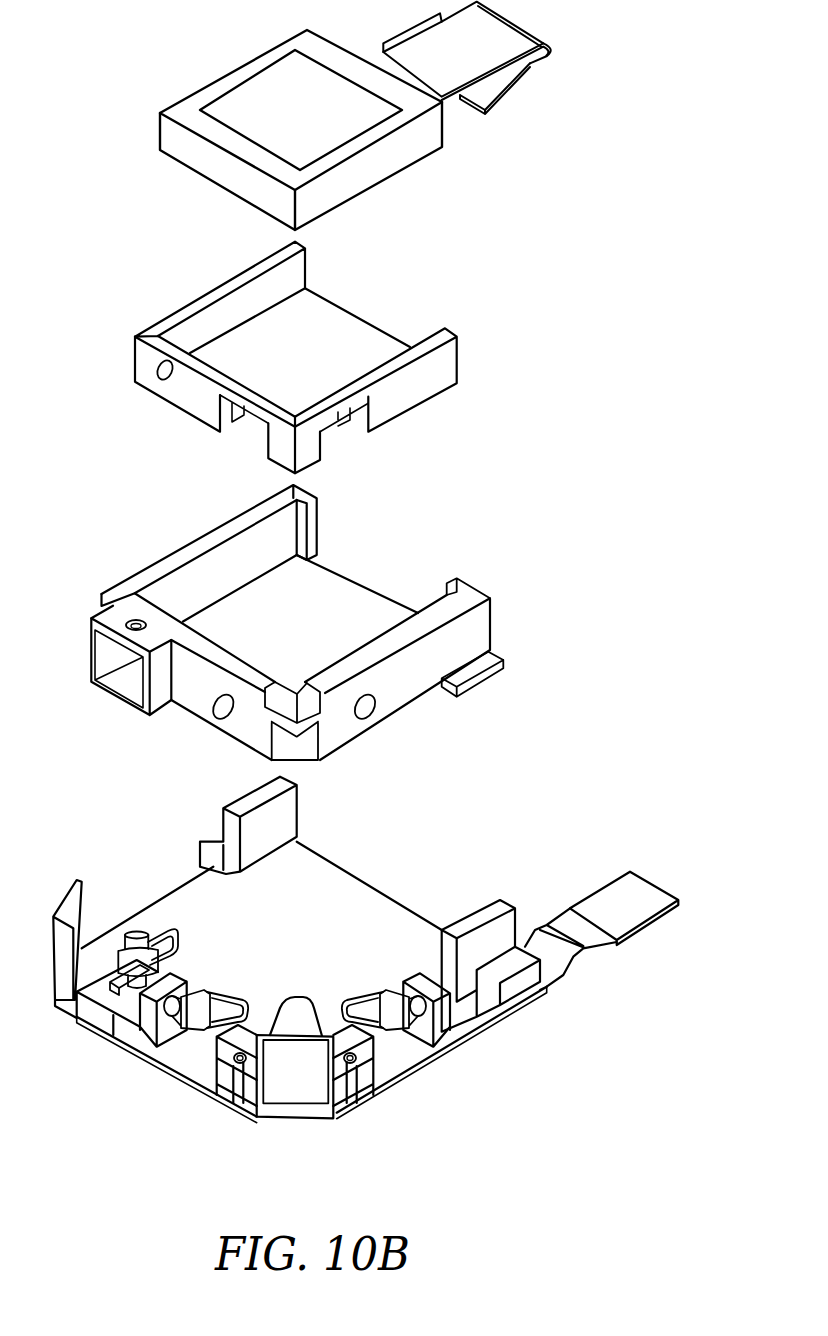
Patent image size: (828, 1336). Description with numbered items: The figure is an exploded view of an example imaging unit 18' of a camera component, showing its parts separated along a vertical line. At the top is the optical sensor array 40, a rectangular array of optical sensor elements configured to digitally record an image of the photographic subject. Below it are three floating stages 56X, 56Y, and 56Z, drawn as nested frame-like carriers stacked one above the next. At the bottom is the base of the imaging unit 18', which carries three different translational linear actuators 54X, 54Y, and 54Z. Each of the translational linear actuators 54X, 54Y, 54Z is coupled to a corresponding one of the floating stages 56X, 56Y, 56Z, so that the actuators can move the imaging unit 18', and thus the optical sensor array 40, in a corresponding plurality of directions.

The optical sensor array 40 is at (314, 124).
The floating stage 56X is at (478, 66).
The floating stage 56Y is at (321, 362).
The floating stage 56Z is at (314, 634).
The imaging unit 18' is at (365, 950).
The translational linear actuator 54X is at (377, 1038).
The translational linear actuator 54Y is at (213, 1033).
The translational linear actuator 54Z is at (140, 930).